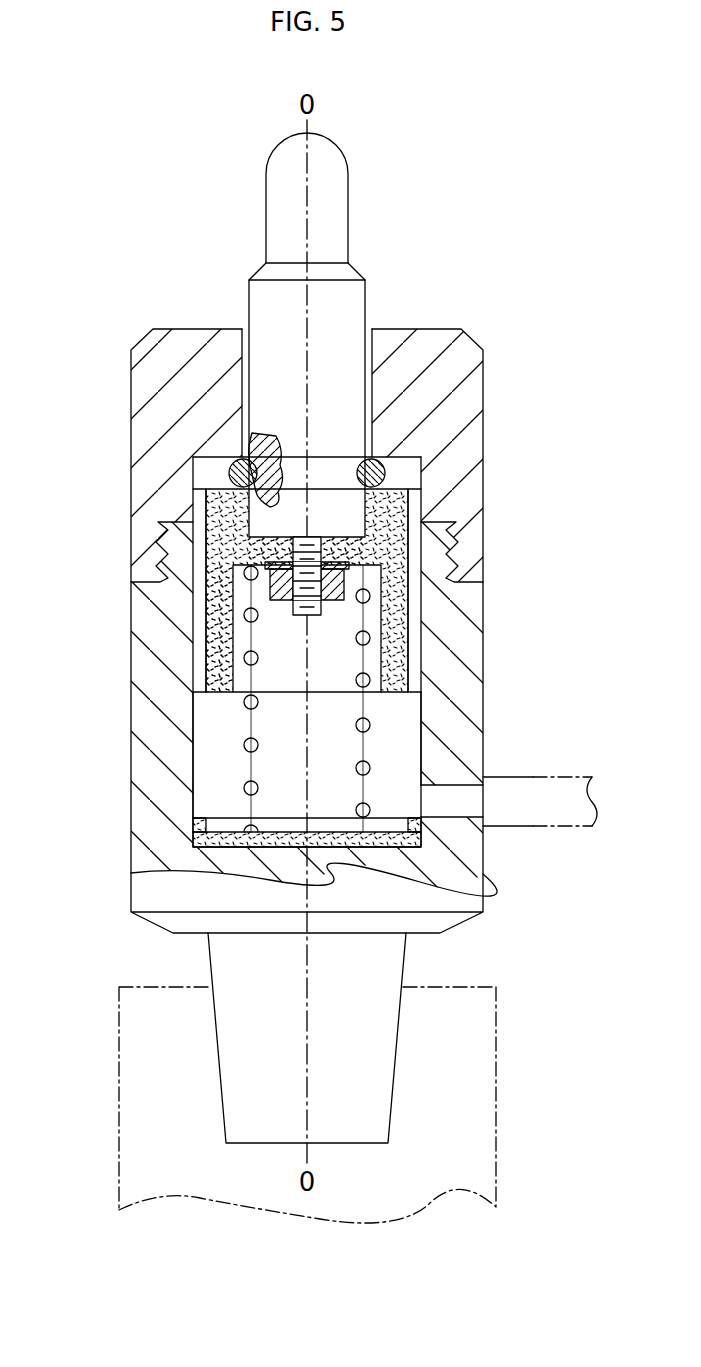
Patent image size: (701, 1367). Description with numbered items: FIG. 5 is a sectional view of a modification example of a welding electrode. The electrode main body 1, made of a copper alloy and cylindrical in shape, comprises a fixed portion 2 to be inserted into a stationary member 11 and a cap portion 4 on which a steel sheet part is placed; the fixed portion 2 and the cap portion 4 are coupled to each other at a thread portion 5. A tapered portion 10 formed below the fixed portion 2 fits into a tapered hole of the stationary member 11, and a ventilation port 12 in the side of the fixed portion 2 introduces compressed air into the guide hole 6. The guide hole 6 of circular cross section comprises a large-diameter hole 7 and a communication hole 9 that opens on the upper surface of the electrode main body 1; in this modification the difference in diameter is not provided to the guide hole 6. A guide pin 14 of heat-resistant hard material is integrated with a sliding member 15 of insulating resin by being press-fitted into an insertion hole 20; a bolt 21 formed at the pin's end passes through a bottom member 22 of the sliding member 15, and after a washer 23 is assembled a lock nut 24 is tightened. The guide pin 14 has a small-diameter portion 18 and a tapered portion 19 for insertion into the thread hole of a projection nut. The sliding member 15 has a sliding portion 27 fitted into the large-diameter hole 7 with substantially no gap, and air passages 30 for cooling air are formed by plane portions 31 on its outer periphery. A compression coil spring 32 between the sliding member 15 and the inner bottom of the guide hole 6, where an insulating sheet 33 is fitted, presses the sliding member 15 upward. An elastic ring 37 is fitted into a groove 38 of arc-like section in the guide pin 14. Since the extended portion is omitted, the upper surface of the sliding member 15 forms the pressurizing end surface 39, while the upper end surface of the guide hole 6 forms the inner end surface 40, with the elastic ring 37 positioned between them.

The electrode main body 1 is at (128, 797).
The fixed portion 2 is at (131, 848).
The cap portion 4 is at (131, 375).
The thread portion 5 is at (457, 544).
The guide hole 6 is at (205, 756).
The large-diameter hole 7 is at (411, 752).
The communication hole 9 is at (248, 330).
The tapered portion 10 is at (405, 1113).
The stationary member 11 is at (496, 1083).
The ventilation port 12 is at (467, 816).
The guide pin 14 is at (368, 300).
The sliding member 15 is at (212, 548).
The small-diameter portion 18 is at (266, 203).
The tapered portion 19 is at (263, 272).
The insertion hole 20 is at (407, 496).
The bolt 21 is at (291, 609).
The bottom member 22 is at (345, 552).
The washer 23 is at (344, 567).
The lock nut 24 is at (337, 601).
The sliding portion 27 is at (210, 632).
The air passages 30 is at (207, 662).
The plane portions 31 is at (410, 660).
The compression coil spring 32 is at (258, 744).
The insulating sheet 33 is at (343, 847).
The elastic ring 37 is at (361, 461).
The groove 38 is at (288, 447).
The pressurizing end surface 39 is at (192, 471).
The inner end surface 40 is at (400, 466).